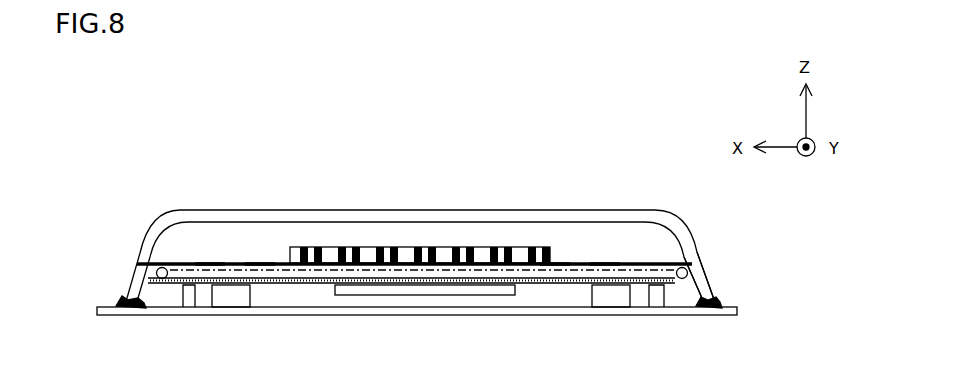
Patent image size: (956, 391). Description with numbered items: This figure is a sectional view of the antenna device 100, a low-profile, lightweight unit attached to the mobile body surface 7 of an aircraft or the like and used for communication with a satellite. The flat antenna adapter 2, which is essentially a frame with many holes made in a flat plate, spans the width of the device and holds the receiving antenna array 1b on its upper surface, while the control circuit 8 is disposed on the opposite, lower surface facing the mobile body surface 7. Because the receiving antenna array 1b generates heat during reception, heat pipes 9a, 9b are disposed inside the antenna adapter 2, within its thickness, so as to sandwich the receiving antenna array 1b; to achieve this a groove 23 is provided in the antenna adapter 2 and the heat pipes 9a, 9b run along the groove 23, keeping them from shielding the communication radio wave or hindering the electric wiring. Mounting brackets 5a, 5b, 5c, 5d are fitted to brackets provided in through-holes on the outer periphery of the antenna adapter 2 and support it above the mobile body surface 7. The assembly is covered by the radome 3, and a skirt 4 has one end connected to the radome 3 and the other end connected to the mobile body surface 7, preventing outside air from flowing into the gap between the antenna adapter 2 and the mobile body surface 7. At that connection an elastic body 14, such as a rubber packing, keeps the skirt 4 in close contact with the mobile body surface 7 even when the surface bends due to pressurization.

The antenna device 100 is at (226, 84).
The receiving antenna array 1b is at (420, 202).
The antenna adapter 2 is at (414, 225).
The radome 3 is at (420, 234).
The skirt 4 is at (711, 271).
The mobile body surface 7 is at (122, 282).
The control circuit 8 is at (425, 327).
The heat pipe 9a is at (216, 214).
The heat pipe 9b is at (562, 217).
The groove 23 is at (437, 214).
The mounting bracket 5a is at (231, 324).
The mounting bracket 5b is at (611, 322).
The mounting bracket 5c is at (182, 324).
The mounting bracket 5d is at (651, 329).
The elastic body 14 is at (417, 347).